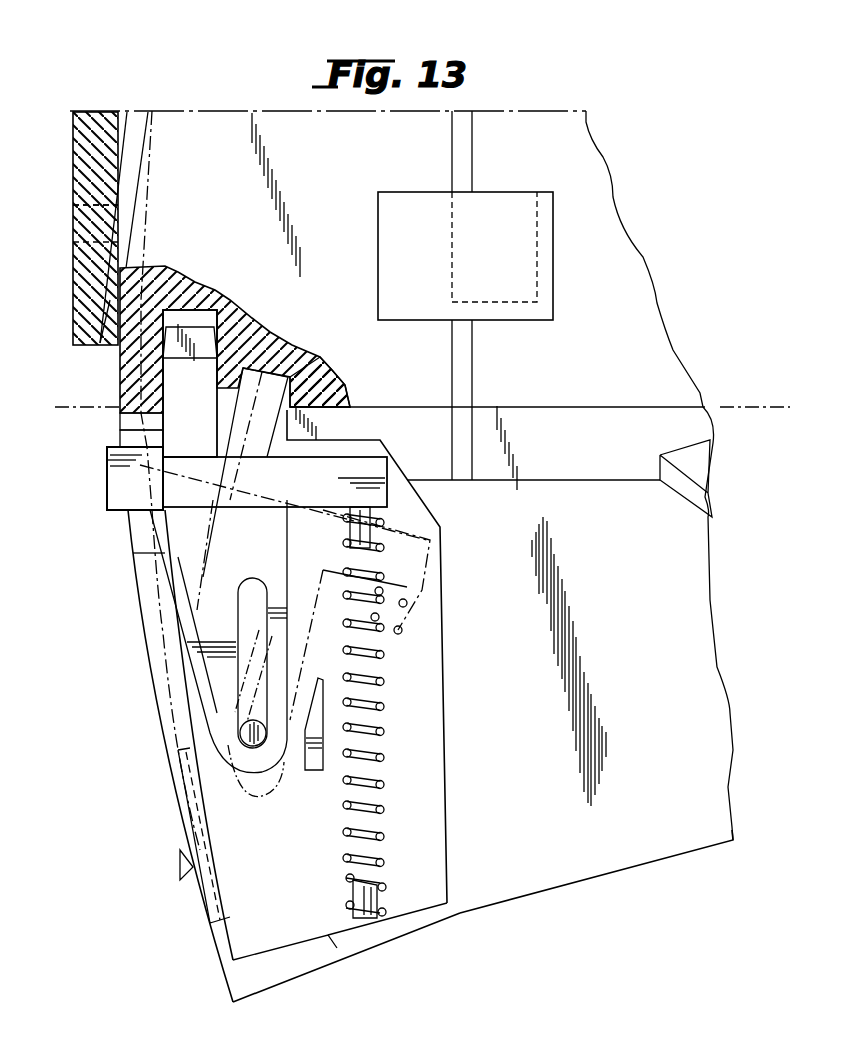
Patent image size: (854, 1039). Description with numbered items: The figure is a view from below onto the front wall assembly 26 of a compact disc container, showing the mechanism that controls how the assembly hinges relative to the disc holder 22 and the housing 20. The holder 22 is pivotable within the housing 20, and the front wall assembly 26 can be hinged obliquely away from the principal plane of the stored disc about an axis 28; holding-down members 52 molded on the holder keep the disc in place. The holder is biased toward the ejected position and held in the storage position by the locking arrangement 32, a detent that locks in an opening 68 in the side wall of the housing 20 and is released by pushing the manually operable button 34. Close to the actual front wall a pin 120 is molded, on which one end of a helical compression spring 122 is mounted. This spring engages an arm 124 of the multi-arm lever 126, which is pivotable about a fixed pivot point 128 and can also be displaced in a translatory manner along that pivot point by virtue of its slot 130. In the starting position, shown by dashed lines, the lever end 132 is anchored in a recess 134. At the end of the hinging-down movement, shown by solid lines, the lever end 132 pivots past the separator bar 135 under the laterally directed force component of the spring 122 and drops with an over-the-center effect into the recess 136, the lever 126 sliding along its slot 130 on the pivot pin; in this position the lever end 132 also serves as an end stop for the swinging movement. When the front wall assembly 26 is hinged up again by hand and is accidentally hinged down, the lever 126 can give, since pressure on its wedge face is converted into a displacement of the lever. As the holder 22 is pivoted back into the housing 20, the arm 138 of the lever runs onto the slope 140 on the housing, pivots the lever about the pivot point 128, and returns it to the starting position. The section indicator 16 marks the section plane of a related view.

The housing 20 is at (70, 245).
The disc holder 22 is at (117, 108).
The opening 68 is at (73, 206).
The slope 140 is at (107, 325).
The recess 136 is at (178, 315).
The recess 134 is at (330, 376).
The separator bar 135 is at (222, 382).
The lever end 132 is at (258, 365).
The holding-down members 52 is at (555, 297).
The axis 28 is at (578, 407).
The front wall assembly 26 is at (690, 583).
The section line 16 is at (62, 450).
The arm 124 is at (385, 462).
The arm 138 is at (120, 502).
The multi-arm lever 126 is at (165, 618).
The slot 130 is at (243, 600).
The pivot point 128 is at (248, 745).
The locking arrangement 32 is at (180, 868).
The button 34 is at (328, 948).
The helical compression spring 122 is at (383, 786).
The pin 120 is at (358, 897).